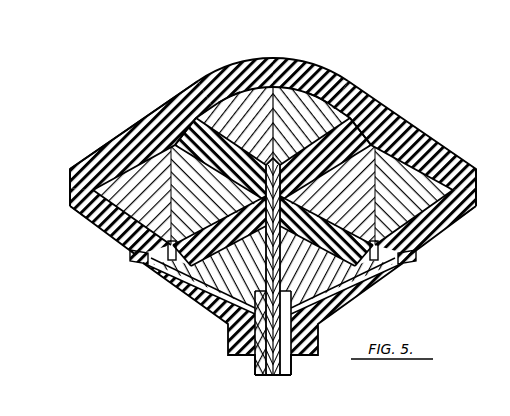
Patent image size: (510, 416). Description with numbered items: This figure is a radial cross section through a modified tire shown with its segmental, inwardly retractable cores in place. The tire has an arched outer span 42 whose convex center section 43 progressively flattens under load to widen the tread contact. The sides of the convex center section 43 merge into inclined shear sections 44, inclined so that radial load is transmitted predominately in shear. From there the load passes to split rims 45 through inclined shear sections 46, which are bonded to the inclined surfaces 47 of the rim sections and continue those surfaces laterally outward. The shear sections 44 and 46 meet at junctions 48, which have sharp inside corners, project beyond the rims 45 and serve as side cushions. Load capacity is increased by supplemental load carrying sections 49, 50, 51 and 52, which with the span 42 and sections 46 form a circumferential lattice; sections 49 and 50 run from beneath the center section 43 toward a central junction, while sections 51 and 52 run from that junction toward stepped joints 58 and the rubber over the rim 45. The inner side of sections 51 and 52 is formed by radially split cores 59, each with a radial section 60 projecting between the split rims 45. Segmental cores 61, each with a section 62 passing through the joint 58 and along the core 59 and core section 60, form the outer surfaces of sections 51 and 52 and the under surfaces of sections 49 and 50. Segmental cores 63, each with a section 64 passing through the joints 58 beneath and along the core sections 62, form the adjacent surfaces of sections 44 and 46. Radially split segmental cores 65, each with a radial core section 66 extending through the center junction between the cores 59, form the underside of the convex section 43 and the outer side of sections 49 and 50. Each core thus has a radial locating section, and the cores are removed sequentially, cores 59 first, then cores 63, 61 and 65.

The arched outer span 42 is at (136, 113).
The convex center section 43 is at (288, 56).
The inclined shear sections 44 is at (112, 134).
The split rims 45 is at (167, 277).
The inclined shear sections 46 is at (100, 222).
The inclined surfaces 47 is at (180, 289).
The junctions 48 is at (62, 184).
The supplemental load carrying section 49 is at (230, 135).
The supplemental load carrying section 50 is at (303, 138).
The supplemental load carrying section 51 is at (206, 206).
The supplemental load carrying section 52 is at (339, 207).
The stepped joints 58 is at (133, 257).
The radially split cores 59 is at (200, 298).
The radial section 60 is at (257, 371).
The segmental cores 61 is at (170, 140).
The core section 62 is at (250, 371).
The segmental cores 63 is at (78, 212).
The core section 64 is at (247, 360).
The radially split segmental cores 65 is at (223, 92).
The radial core section 66 is at (262, 373).